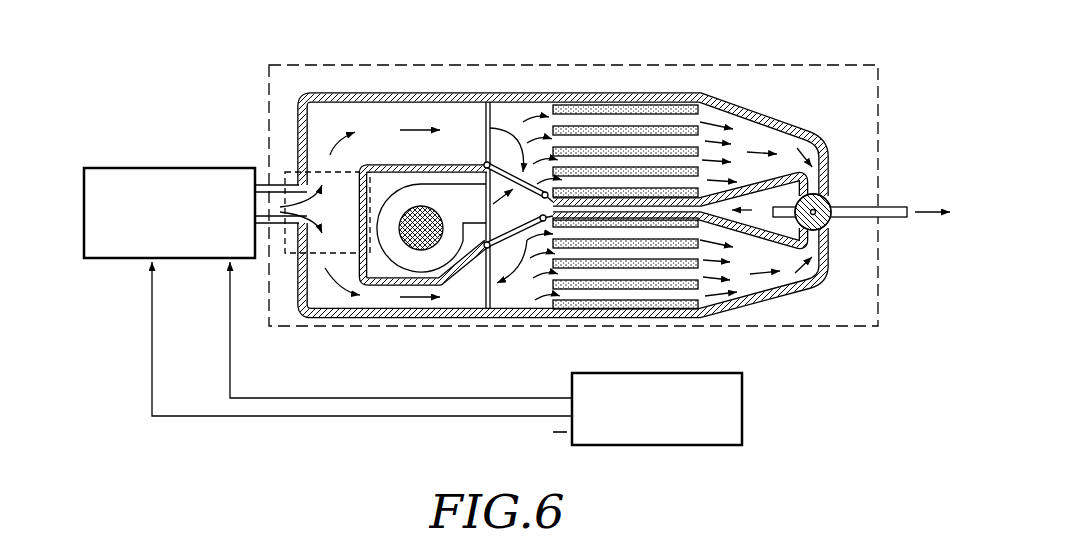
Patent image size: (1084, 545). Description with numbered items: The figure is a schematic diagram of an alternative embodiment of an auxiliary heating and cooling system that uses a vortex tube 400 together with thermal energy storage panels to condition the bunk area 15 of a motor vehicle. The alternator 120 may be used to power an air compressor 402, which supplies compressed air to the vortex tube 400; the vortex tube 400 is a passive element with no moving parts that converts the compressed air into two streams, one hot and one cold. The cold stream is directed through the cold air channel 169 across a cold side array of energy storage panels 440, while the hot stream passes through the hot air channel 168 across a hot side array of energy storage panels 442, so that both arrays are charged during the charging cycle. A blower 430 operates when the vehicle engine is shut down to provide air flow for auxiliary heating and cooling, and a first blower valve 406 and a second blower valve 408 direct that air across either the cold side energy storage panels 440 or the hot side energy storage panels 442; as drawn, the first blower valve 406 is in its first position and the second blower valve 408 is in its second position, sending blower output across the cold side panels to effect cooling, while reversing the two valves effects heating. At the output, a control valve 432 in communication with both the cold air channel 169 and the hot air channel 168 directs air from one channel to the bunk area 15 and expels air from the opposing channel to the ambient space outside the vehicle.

The bunk area 15 is at (628, 66).
The alternator 120 is at (678, 373).
The hot air channel 168 is at (792, 284).
The cold air channel 169 is at (766, 140).
The vortex tube 400 is at (288, 257).
The air compressor 402 is at (152, 168).
The first blower valve 406 is at (492, 118).
The second blower valve 408 is at (644, 205).
The blower 430 is at (428, 188).
The control valve 432 is at (827, 224).
The cold side array of energy storage panels 440 is at (705, 100).
The hot side array of energy storage panels 442 is at (727, 318).